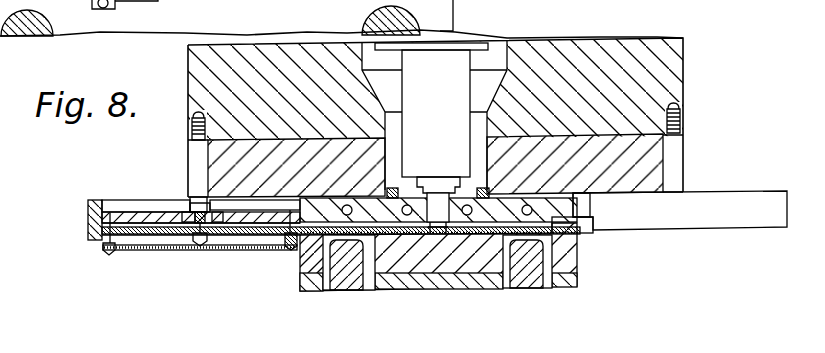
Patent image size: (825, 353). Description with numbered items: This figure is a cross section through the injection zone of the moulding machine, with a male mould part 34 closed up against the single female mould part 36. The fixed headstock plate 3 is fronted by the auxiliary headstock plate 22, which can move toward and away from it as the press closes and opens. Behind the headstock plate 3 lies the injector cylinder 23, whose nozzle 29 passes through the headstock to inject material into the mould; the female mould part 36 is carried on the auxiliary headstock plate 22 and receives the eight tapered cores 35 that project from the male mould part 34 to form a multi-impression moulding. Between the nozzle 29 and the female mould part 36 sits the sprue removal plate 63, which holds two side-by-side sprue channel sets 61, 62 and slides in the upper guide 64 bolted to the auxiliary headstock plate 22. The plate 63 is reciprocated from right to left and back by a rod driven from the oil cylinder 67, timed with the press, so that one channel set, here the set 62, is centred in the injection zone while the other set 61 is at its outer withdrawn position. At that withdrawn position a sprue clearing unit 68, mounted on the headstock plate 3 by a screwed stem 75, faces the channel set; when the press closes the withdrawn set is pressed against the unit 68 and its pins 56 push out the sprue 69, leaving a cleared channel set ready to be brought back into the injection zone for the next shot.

The headstock plate 3 is at (673, 88).
The auxiliary headstock plate 22 is at (637, 149).
The injector cylinder 23 is at (442, 51).
The nozzle 29 is at (437, 204).
The screwed stem 75 is at (702, 171).
The oil cylinder 67 is at (255, 0).
The sprue clearing unit 68 is at (130, 213).
The sprue removal plate 63 is at (88, 234).
The sprue channel set 61 is at (144, 240).
The pins 56 is at (194, 231).
The sprue 69 is at (202, 248).
The female mould part 36 is at (270, 254).
The tapered cores 35 is at (318, 252).
The male mould part 34 is at (302, 284).
The sprue channel set 62 is at (477, 221).
The upper guide 64 is at (770, 195).